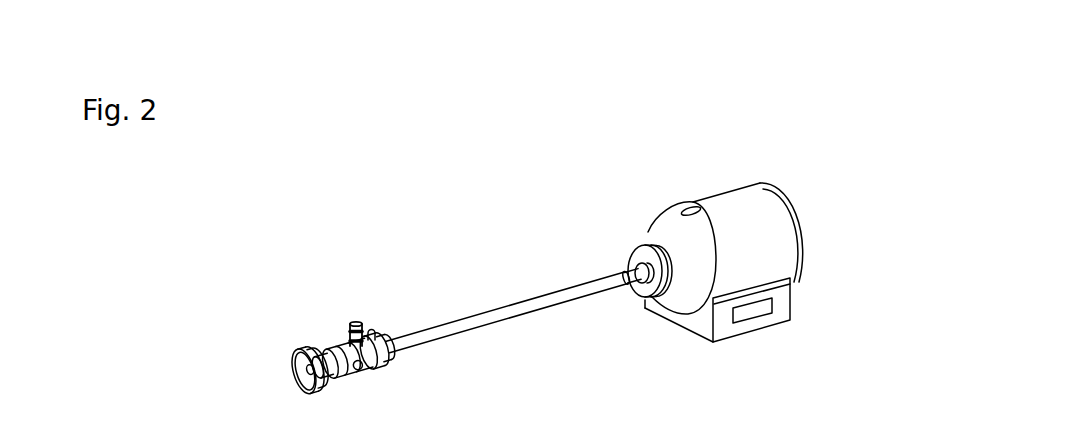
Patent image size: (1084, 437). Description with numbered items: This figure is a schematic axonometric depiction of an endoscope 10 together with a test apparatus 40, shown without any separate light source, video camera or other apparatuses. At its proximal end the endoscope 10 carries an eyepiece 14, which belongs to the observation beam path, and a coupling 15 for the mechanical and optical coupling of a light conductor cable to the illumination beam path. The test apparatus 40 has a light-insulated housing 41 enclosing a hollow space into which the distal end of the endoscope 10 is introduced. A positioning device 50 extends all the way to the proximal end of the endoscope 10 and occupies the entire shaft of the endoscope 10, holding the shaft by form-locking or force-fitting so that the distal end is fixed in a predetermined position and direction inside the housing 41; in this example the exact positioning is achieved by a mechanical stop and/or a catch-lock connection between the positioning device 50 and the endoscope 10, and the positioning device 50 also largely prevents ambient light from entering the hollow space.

The endoscope 10 is at (313, 280).
The eyepiece 14 is at (291, 344).
The coupling 15 is at (357, 318).
The test apparatus 40 is at (660, 163).
The light-insulated housing 41 is at (778, 186).
The positioning device 50 is at (503, 312).